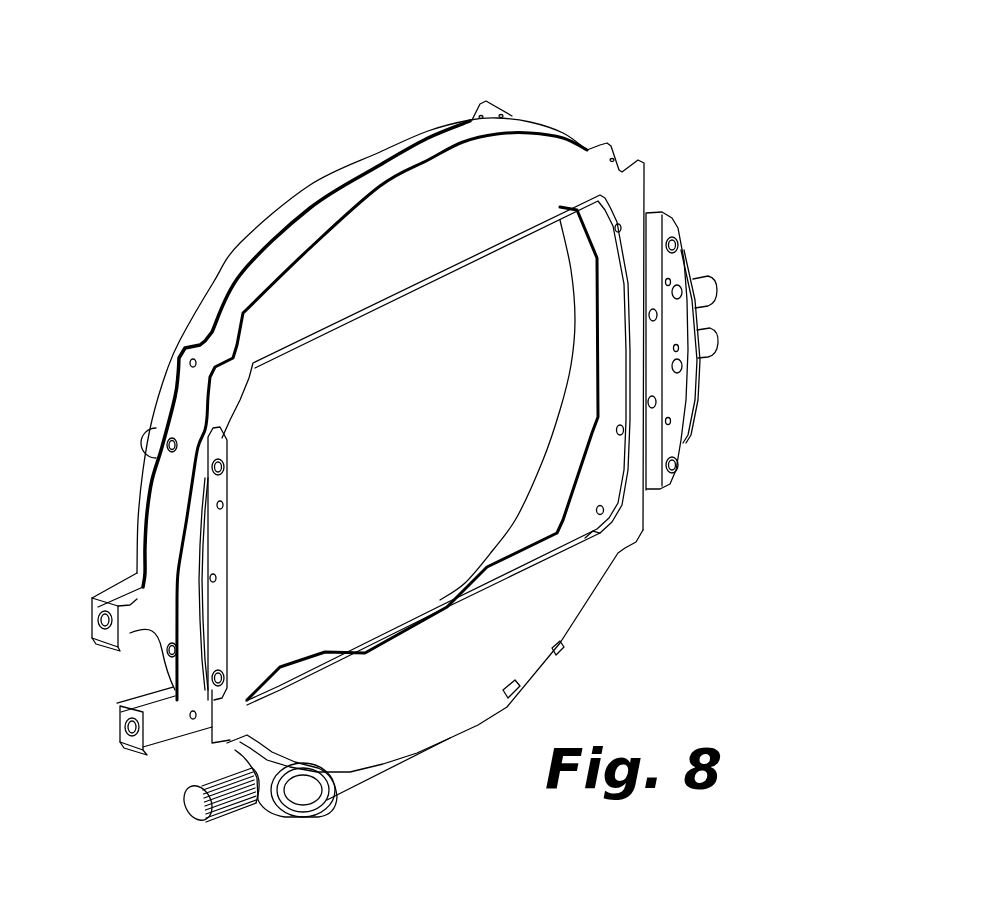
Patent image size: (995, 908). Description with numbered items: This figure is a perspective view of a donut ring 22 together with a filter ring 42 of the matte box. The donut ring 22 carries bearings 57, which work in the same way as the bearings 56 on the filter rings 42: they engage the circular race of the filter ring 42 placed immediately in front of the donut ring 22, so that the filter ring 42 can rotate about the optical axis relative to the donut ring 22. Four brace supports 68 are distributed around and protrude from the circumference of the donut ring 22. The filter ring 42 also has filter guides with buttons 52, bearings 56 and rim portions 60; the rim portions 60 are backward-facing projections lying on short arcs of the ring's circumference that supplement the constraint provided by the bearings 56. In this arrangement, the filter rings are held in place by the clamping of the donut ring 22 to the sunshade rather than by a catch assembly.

The donut ring 22 is at (320, 210).
The filter ring 42 is at (548, 160).
The button 52 is at (197, 512).
The bearings 56 is at (674, 238).
The bearings 57 is at (163, 447).
The rim portions 60 is at (698, 395).
The brace supports 68 is at (100, 625).